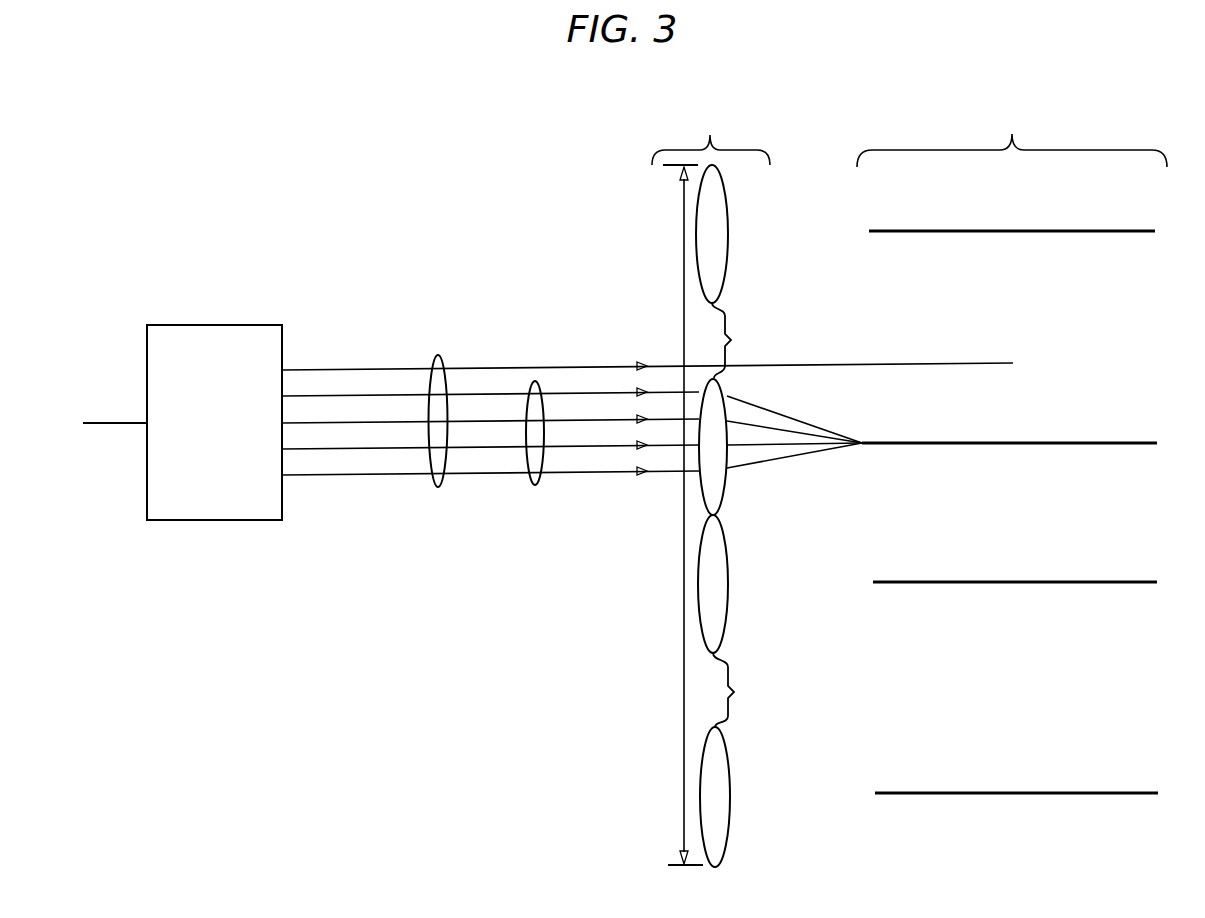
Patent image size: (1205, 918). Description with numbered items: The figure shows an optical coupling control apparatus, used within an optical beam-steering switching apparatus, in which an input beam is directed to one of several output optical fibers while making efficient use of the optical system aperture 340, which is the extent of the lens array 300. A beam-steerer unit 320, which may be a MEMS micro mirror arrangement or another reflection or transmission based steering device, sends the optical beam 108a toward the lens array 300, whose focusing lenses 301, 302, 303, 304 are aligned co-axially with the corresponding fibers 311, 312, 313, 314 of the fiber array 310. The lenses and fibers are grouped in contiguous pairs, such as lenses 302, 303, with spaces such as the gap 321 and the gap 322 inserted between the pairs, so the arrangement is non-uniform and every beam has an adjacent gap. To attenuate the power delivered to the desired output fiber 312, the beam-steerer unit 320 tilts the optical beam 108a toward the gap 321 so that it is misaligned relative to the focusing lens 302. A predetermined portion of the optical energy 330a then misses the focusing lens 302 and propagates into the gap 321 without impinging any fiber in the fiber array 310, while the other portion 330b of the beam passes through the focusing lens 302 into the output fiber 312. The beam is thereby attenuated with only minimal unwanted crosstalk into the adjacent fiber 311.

The lens array 300 is at (757, 487).
The focusing lens 301 is at (728, 236).
The focusing lens 302 is at (721, 384).
The focusing lens 303 is at (728, 540).
The focusing lens 304 is at (729, 749).
The fiber array 310 is at (1012, 449).
The fiber 311 is at (974, 231).
The output fiber 312 is at (976, 443).
The fiber 313 is at (978, 582).
The fiber 314 is at (978, 793).
The beam-steerer unit 320 is at (212, 325).
The gap 321 is at (115, 423).
The spacer 322 is at (748, 690).
The portion of the optical energy 330a is at (847, 364).
The other portion of the optical beam 330b is at (535, 486).
The optical beam 108a is at (438, 355).
The optical system aperture 340 is at (684, 752).